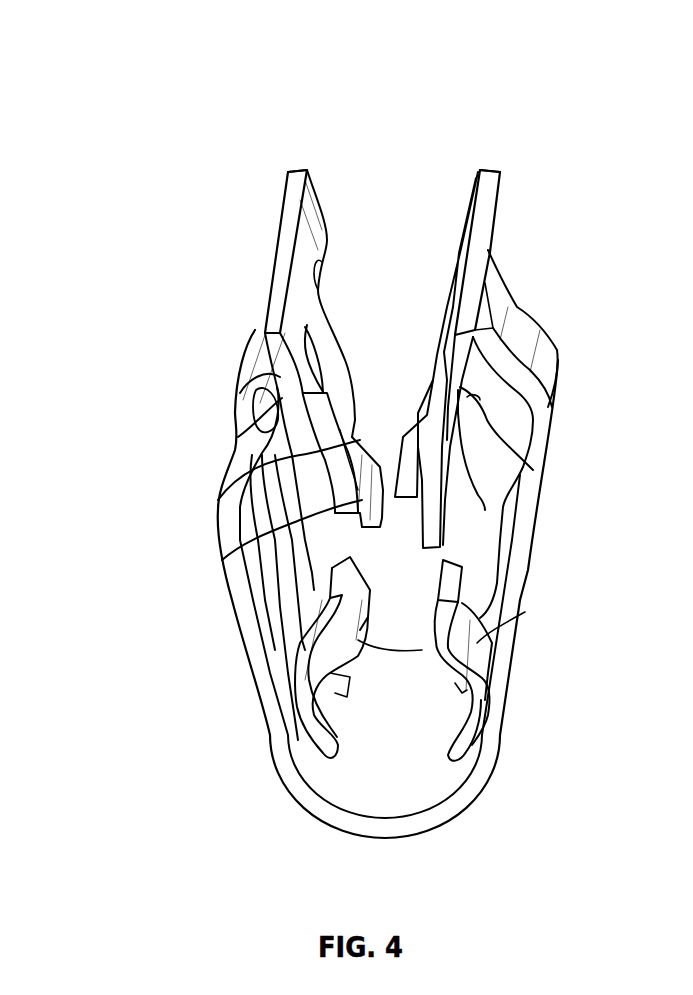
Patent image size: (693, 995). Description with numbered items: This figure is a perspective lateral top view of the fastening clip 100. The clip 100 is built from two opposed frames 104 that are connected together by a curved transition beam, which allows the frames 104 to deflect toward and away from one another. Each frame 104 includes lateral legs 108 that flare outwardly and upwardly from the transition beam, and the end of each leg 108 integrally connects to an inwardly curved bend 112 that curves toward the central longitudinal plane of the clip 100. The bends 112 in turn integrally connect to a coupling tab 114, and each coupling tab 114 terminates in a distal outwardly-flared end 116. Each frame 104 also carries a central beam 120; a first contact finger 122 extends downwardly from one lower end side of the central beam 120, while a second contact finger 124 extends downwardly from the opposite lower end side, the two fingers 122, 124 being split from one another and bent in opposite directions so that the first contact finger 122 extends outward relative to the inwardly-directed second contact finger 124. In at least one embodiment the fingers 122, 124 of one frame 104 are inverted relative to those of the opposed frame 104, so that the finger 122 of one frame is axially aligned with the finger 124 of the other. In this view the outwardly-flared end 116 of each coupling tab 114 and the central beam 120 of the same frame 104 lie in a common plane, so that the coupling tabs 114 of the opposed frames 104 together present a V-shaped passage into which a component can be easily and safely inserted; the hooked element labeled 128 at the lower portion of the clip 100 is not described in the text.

The fastening clip 100 is at (236, 78).
The frame 104 is at (238, 628).
The lateral leg 108 is at (517, 553).
The inwardly curved bend 112 is at (528, 485).
The coupling tab 114 is at (290, 208).
The outwardly-flared end 116 is at (295, 178).
The central beam 120 is at (432, 373).
The first contact finger 122 is at (432, 533).
The second contact finger 124 is at (397, 462).
The hook 128 is at (473, 658).